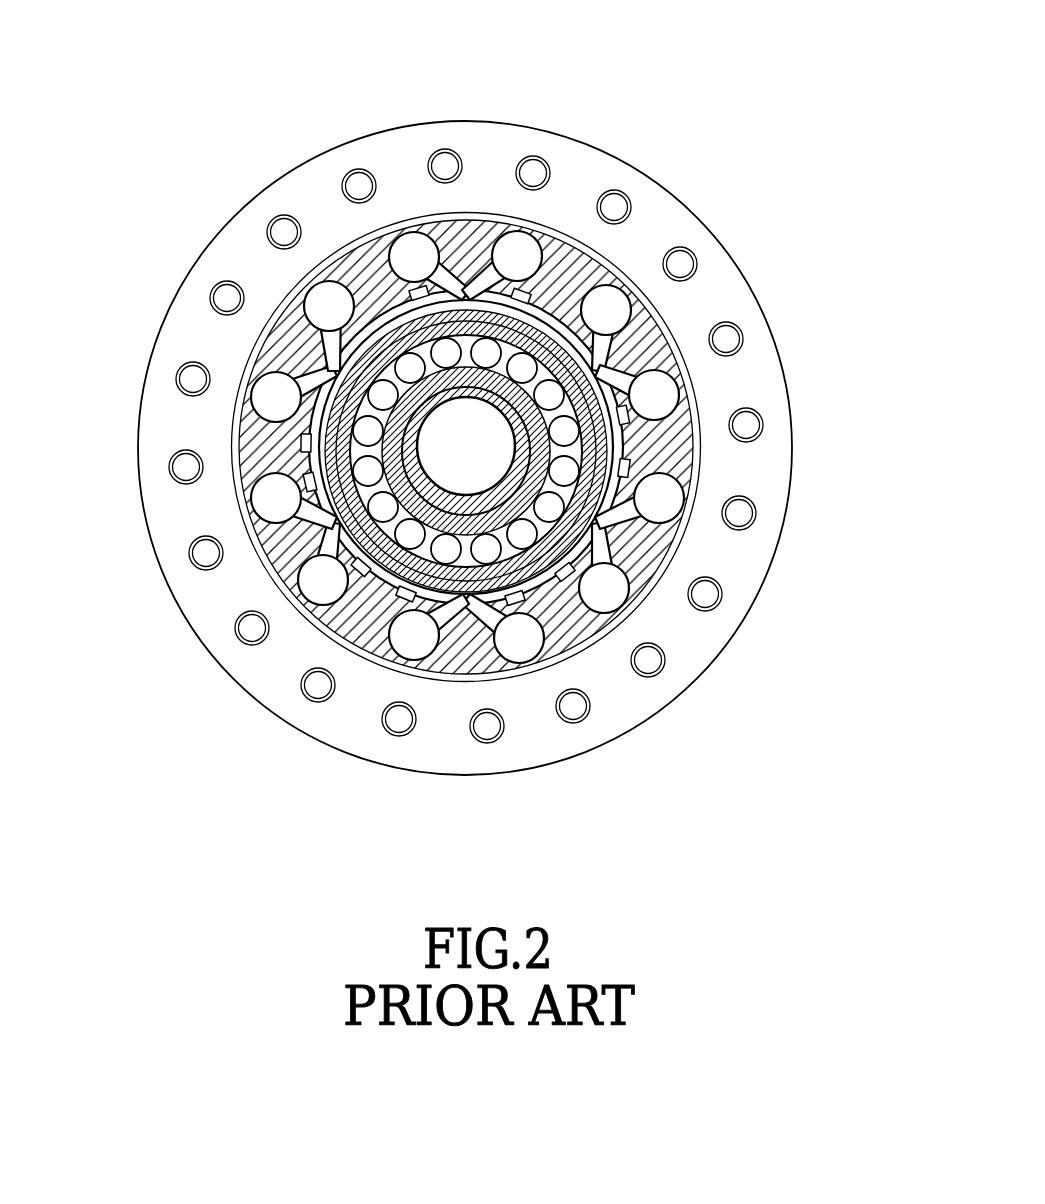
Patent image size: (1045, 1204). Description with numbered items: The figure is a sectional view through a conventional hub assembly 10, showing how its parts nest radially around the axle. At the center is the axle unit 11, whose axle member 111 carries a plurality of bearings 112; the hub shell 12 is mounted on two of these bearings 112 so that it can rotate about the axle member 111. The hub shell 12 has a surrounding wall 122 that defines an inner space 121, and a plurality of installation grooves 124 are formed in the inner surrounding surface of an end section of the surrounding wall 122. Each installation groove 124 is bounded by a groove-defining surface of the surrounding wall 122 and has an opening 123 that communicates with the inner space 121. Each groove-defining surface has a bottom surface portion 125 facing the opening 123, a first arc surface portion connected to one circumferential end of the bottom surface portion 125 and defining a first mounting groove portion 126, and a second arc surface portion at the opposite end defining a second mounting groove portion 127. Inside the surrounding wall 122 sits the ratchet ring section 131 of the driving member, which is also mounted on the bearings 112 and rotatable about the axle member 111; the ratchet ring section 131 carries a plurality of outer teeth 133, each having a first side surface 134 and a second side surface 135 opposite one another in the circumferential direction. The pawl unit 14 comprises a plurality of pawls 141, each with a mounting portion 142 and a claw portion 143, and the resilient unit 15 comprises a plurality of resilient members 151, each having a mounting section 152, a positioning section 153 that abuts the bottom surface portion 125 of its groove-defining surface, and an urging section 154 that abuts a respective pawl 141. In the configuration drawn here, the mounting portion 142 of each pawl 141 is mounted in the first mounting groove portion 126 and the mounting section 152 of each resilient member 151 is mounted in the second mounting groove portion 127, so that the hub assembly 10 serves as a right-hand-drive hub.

The hub assembly 10 is at (192, 250).
The axle unit 11 is at (330, 446).
The axle member 111 is at (402, 478).
The bearings 112 is at (360, 512).
The hub shell 12 is at (339, 136).
The inner space 121 is at (413, 300).
The surrounding wall 122 is at (465, 227).
The opening 123 is at (600, 353).
The installation grooves 124 is at (640, 365).
The bottom surface portion 125 is at (615, 355).
The first mounting groove portion 126 is at (693, 438).
The second mounting groove portion 127 is at (610, 355).
The ratchet ring section 131 is at (543, 583).
The outer teeth 133 is at (492, 593).
The first side surface 134 is at (568, 335).
The second side surface 135 is at (520, 613).
The pawl unit 14 is at (610, 633).
The pawls 141 is at (663, 400).
The mounting portion 142 is at (668, 398).
The claw portion 143 is at (680, 478).
The resilient unit 15 is at (692, 528).
The resilient members 151 is at (630, 365).
The mounting section 152 is at (593, 290).
The positioning section 153 is at (645, 372).
The urging section 154 is at (597, 357).